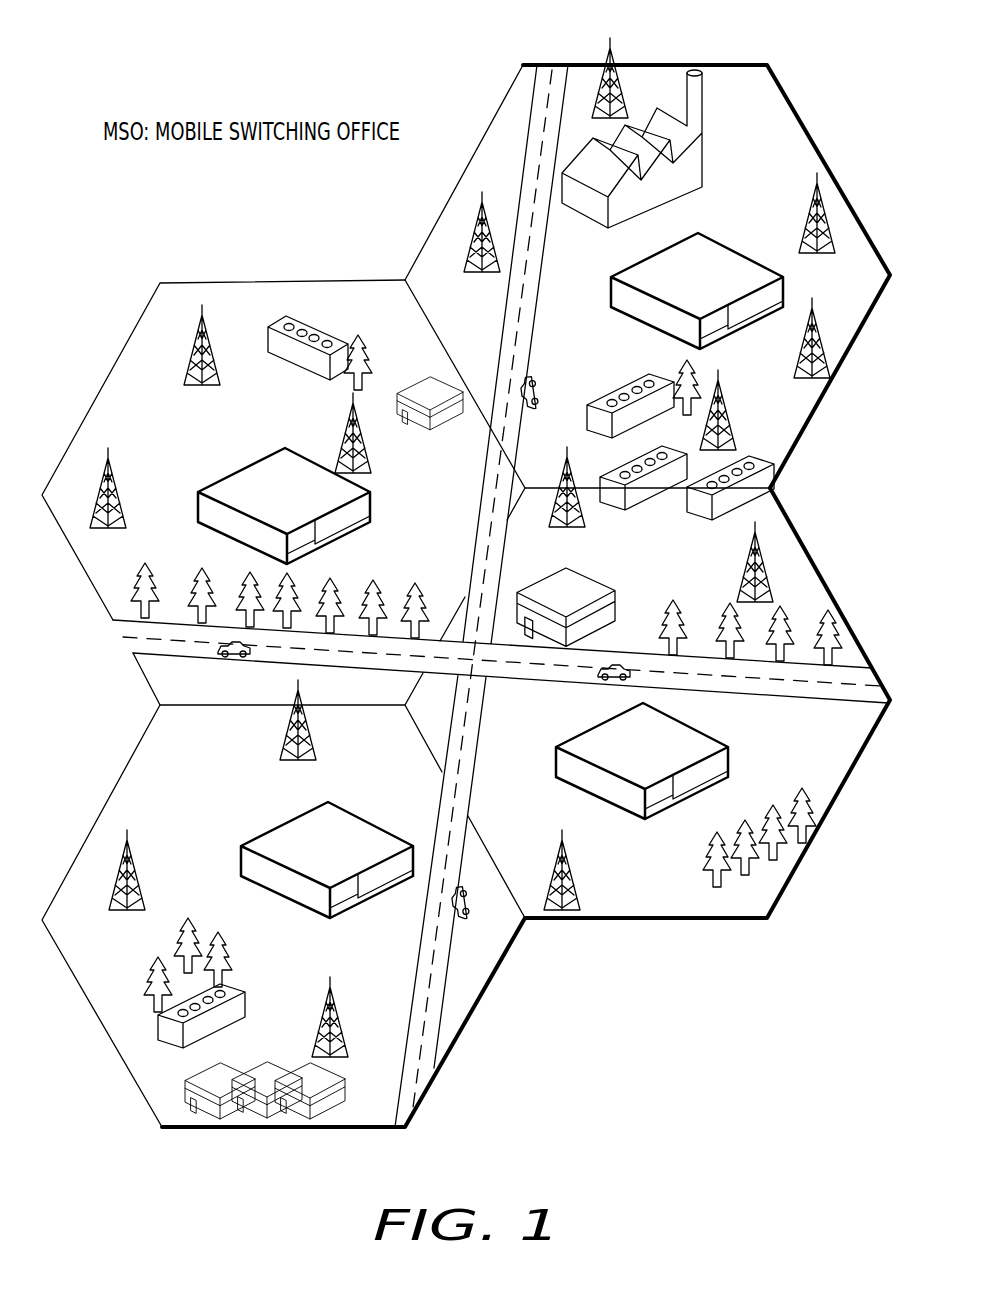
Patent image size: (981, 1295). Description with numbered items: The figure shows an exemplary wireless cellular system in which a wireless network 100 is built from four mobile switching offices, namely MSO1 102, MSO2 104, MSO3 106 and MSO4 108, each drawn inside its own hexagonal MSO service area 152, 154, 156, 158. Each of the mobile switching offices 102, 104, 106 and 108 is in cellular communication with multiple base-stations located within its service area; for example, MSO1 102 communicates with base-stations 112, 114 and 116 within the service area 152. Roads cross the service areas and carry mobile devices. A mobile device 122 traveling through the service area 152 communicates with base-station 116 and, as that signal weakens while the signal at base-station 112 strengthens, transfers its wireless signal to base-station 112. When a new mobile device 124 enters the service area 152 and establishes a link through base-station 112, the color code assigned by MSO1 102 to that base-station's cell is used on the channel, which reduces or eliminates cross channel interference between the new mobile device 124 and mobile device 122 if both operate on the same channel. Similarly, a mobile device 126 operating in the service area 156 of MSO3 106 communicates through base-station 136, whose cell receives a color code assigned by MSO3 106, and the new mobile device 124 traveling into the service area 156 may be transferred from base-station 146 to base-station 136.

The wireless network 100 is at (604, 1031).
The mobile switching office MSO1 102 is at (270, 484).
The mobile switching office MSO2 104 is at (683, 269).
The mobile switching office MSO3 106 is at (628, 739).
The mobile switching office MSO4 108 is at (313, 838).
The base-station 112 is at (343, 440).
The base-station 114 is at (192, 360).
The base-station 116 is at (96, 503).
The mobile device 122 is at (220, 646).
The new mobile device 124 is at (528, 396).
The mobile device 126 is at (600, 677).
The base-station 136 is at (560, 473).
The base-station 146 is at (722, 400).
The MSO service area 152 is at (283, 492).
The MSO service area 154 is at (654, 282).
The MSO service area 156 is at (703, 703).
The MSO service area 158 is at (283, 903).